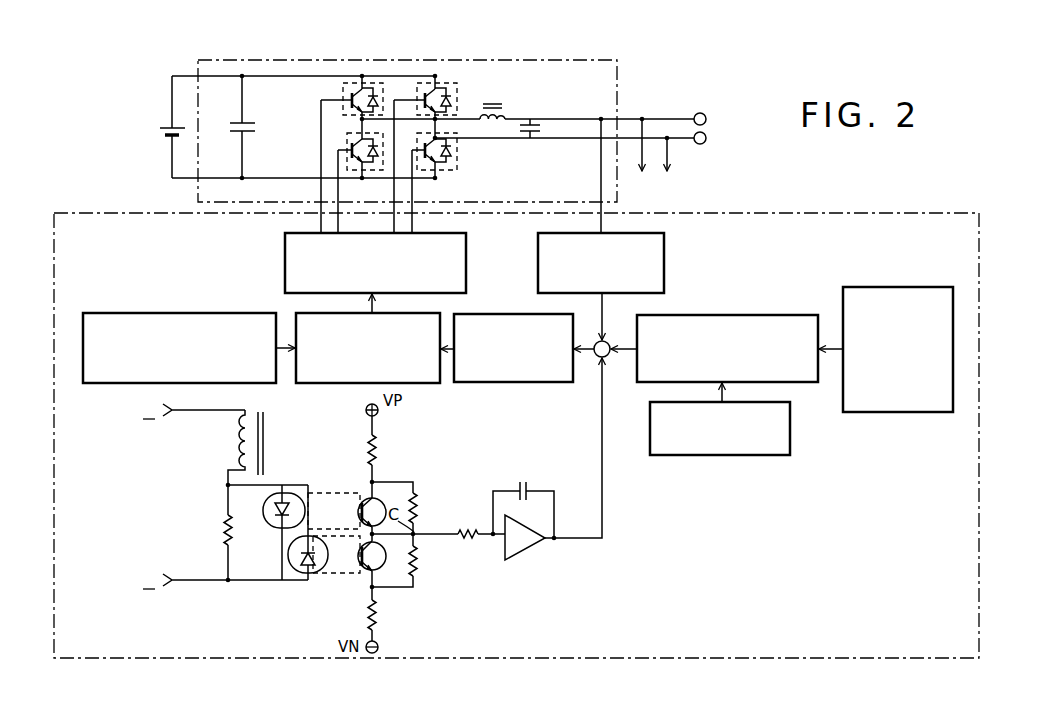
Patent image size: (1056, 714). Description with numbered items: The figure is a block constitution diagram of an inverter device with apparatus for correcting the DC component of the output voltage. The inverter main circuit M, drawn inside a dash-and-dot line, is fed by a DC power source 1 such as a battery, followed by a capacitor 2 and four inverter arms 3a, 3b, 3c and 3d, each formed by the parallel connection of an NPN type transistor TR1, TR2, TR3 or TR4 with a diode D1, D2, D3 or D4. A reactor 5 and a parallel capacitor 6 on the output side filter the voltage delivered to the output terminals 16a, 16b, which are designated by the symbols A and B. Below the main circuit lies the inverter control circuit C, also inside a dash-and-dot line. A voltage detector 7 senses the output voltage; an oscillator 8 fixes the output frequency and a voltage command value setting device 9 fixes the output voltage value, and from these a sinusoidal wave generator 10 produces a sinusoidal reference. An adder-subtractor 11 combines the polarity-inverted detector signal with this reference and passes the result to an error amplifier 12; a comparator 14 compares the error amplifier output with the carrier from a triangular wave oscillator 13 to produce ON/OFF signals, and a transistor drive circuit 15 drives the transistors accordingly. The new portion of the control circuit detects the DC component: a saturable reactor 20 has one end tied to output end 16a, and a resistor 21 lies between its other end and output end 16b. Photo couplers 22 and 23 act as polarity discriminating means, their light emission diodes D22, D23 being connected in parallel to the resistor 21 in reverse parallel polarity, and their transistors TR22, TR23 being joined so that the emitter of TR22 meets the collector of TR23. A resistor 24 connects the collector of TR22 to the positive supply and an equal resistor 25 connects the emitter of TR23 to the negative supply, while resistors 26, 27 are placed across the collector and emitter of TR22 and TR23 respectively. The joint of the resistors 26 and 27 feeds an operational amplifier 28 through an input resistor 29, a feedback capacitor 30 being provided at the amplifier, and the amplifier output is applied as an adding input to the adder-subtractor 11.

The DC power source 1 is at (160, 131).
The capacitor 2 is at (236, 129).
The inverter arm 3a is at (341, 96).
The inverter arm 3b is at (346, 148).
The inverter arm 3c is at (416, 96).
The inverter arm 3d is at (416, 150).
The NPN type transistor TR1 is at (352, 97).
The NPN type transistor TR2 is at (338, 150).
The NPN type transistor TR3 is at (425, 97).
The NPN type transistor TR4 is at (446, 170).
The diode D1 is at (374, 88).
The diode D2 is at (374, 162).
The diode D3 is at (454, 104).
The diode D4 is at (453, 155).
The reactor 5 is at (499, 104).
The capacitor 6 is at (534, 118).
The voltage detector 7 is at (664, 271).
The oscillator 8 is at (790, 437).
The voltage command value setting device 9 is at (900, 287).
The sinusoidal wave generator 10 is at (765, 315).
The adder-subtractor 11 is at (596, 358).
The error amplifier 12 is at (503, 313).
The triangular wave oscillator 13 is at (180, 312).
The comparator 14 is at (357, 384).
The transistor drive circuit 15 is at (466, 271).
The output terminal 16a is at (701, 112).
The output terminal 16b is at (702, 145).
The saturable reactor 20 is at (246, 410).
The resistor 21 is at (223, 533).
The photo coupler 22 is at (315, 493).
The photo coupler 23 is at (320, 574).
The light emission diode D22 is at (283, 494).
The light emission diode D23 is at (297, 562).
The transistor TR22 is at (349, 508).
The transistor TR23 is at (356, 572).
The resistor 24 is at (378, 443).
The resistor 25 is at (380, 626).
The resistor 26 is at (417, 492).
The resistor 27 is at (418, 576).
The operational amplifier 28 is at (528, 558).
The input resistor 29 is at (478, 538).
The capacitor 30 is at (533, 490).
The inverter main circuit M is at (619, 105).
The inverter control circuit C is at (981, 292).
The output end symbol A is at (649, 194).
The output end symbol B is at (673, 194).